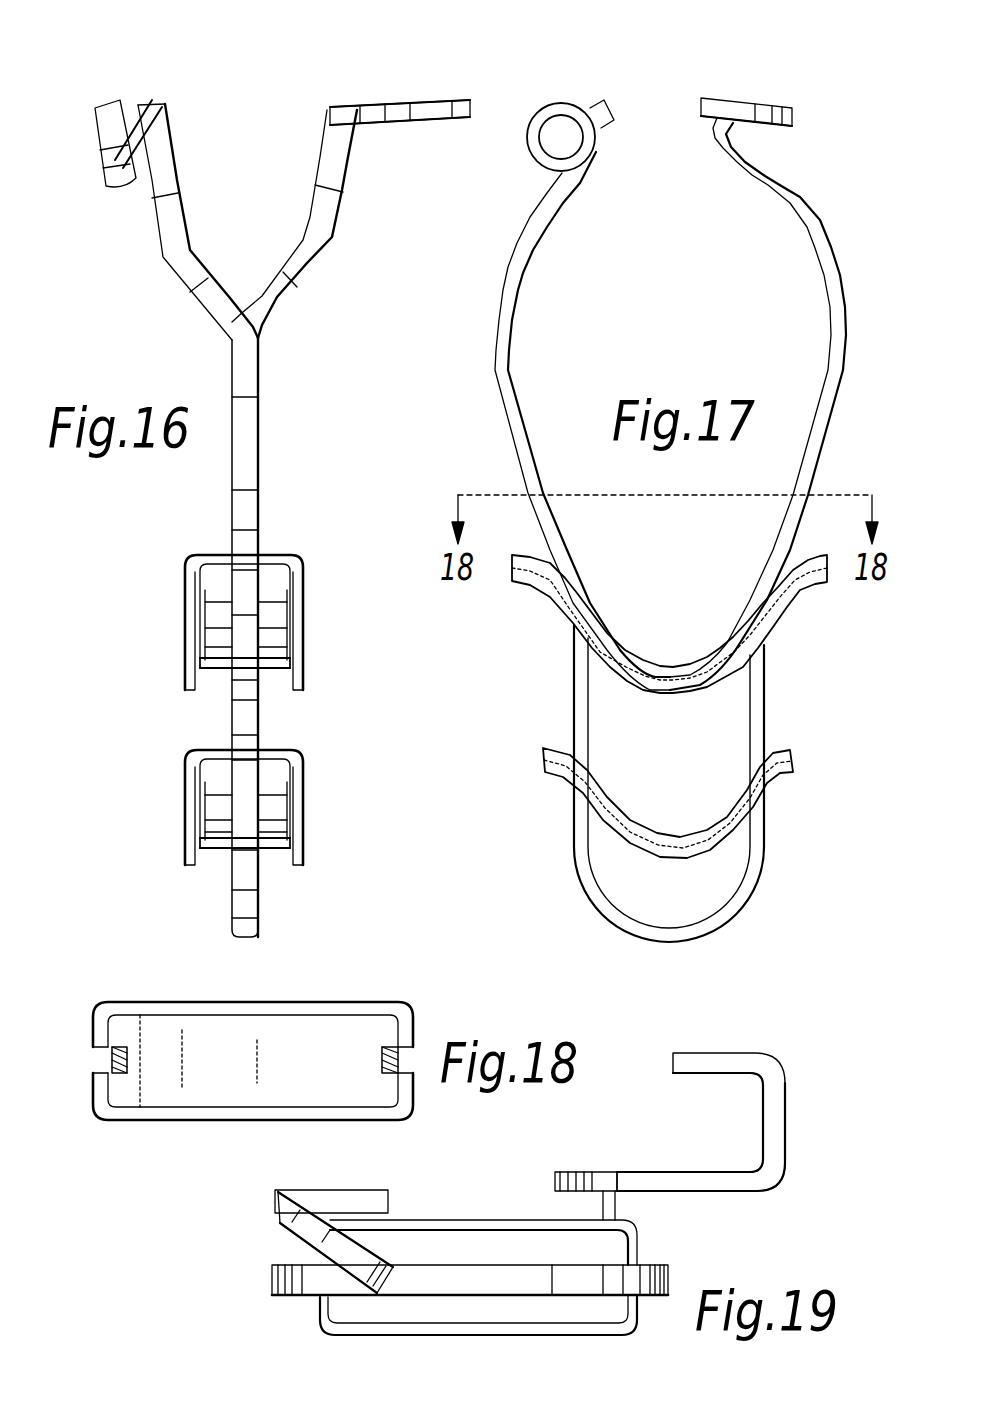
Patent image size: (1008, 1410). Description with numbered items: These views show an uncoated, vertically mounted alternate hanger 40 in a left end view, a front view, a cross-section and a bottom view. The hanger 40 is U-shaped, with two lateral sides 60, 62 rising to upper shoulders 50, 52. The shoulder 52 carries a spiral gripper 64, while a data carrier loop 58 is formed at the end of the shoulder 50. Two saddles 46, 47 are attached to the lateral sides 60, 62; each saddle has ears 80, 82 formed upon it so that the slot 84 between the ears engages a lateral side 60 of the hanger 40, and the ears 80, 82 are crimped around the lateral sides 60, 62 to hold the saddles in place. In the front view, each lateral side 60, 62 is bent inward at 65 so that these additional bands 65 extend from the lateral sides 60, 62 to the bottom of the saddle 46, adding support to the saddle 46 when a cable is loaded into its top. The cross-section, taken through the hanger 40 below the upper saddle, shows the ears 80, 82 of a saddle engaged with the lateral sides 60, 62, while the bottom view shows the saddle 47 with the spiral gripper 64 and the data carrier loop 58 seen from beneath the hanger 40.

In FIG. 16, the alternate hanger 40 is at (258, 470).
In FIG. 17, the alternate hanger 40 is at (670, 404).
In FIG. 16, the saddle 46 is at (302, 653).
In FIG. 17, the saddle 46 is at (663, 694).
In FIG. 16, the saddle 47 is at (267, 853).
In FIG. 17, the saddle 47 is at (663, 863).
In FIG. 18, the saddle 47 is at (300, 1070).
In FIG. 19, the saddle 47 is at (470, 1282).
In FIG. 16, the upper shoulder 50 is at (160, 228).
In FIG. 16, the upper shoulder 52 is at (333, 236).
In FIG. 16, the data carrier loop 58 is at (150, 95).
In FIG. 17, the data carrier loop 58 is at (563, 102).
In FIG. 19, the data carrier loop 58 is at (297, 1237).
In FIG. 17, the lateral side 60 is at (765, 722).
In FIG. 18, the lateral side 60 is at (397, 1060).
In FIG. 19, the lateral side 60 is at (670, 1275).
In FIG. 17, the lateral side 62 is at (572, 701).
In FIG. 18, the lateral side 62 is at (113, 1057).
In FIG. 19, the lateral side 62 is at (270, 1278).
In FIG. 16, the spiral gripper 64 is at (353, 107).
In FIG. 17, the spiral gripper 64 is at (793, 108).
In FIG. 19, the spiral gripper 64 is at (787, 1118).
In FIG. 17, the inward bend 65 is at (552, 613).
In FIG. 16, the ear 80 is at (200, 580).
In FIG. 18, the ear 80 is at (102, 1012).
In FIG. 16, the ear 82 is at (283, 580).
In FIG. 18, the ear 82 is at (108, 1107).
In FIG. 16, the slot 84 is at (243, 757).